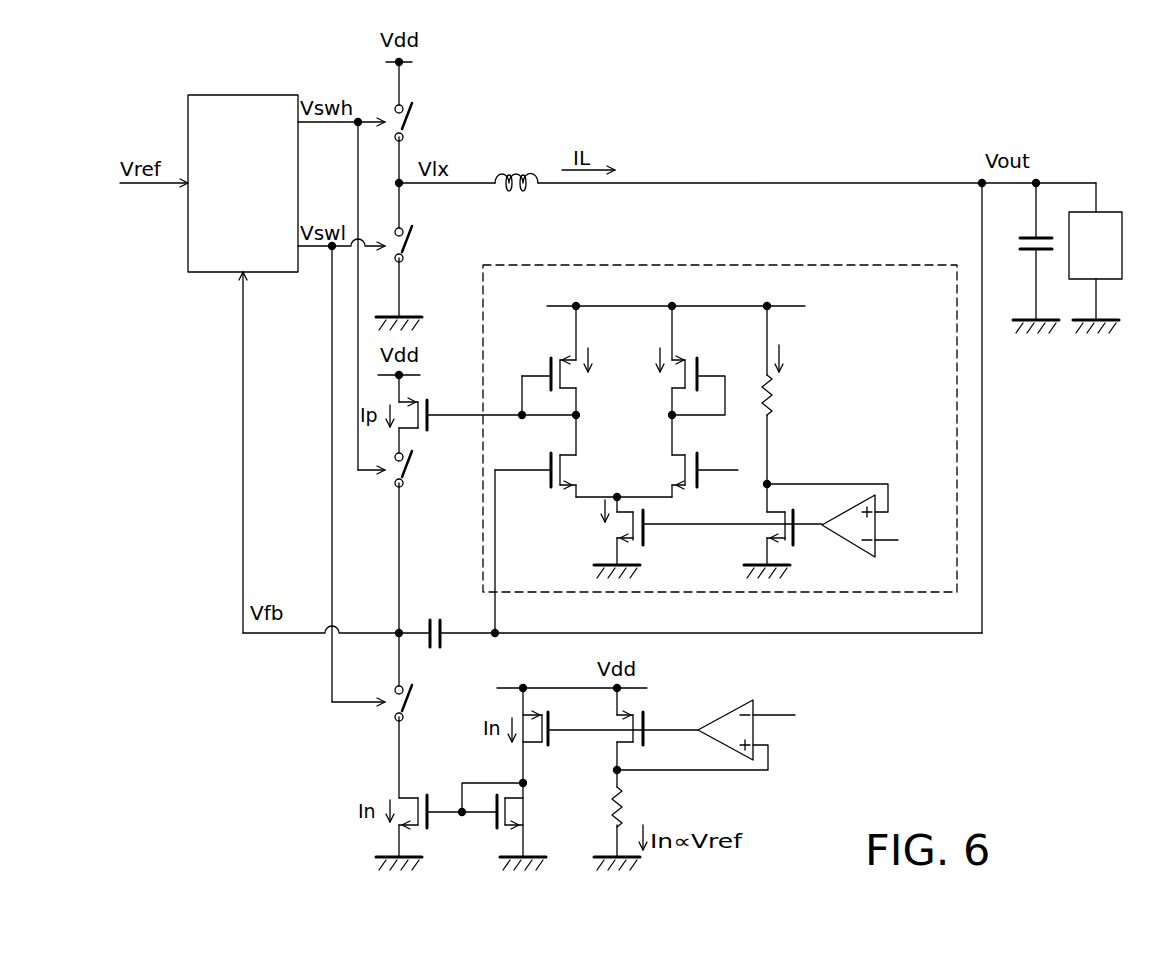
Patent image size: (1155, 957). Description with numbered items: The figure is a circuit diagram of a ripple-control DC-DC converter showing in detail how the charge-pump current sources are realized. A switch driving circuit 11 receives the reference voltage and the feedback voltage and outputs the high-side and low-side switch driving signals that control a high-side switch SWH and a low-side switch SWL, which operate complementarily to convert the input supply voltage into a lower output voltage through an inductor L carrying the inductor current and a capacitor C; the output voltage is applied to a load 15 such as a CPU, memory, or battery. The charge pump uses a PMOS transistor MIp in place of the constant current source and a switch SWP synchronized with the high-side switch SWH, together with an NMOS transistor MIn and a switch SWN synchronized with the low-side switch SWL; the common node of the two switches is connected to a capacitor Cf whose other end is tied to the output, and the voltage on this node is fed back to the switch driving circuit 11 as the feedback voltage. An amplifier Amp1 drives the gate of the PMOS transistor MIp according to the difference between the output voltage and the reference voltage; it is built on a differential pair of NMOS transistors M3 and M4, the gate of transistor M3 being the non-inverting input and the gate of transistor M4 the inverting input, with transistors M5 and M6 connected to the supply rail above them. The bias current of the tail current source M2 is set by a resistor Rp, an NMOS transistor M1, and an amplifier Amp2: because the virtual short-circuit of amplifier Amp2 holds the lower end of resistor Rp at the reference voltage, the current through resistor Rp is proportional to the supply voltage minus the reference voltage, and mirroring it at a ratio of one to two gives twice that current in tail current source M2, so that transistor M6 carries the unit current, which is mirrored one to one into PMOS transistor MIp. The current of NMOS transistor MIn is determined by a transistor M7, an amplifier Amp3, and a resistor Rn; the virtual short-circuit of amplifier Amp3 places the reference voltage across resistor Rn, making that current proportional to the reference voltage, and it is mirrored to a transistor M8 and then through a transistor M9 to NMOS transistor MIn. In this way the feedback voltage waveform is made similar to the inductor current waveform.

The switch driving circuit 11 is at (245, 95).
The load 15 is at (1112, 212).
The high-side switch SWH is at (424, 122).
The low-side switch SWL is at (425, 244).
The switch SWP is at (424, 469).
The switch SWN is at (424, 703).
The inductor L is at (516, 165).
The capacitor C is at (1030, 258).
The capacitor Cf is at (435, 619).
The amplifier Amp1 is at (720, 435).
The amplifier Amp2 is at (856, 532).
The amplifier Amp3 is at (729, 723).
The NMOS transistor M1 is at (776, 531).
The tail current source M2 is at (627, 537).
The transistor M3 is at (709, 464).
The transistor M4 is at (535, 532).
The transistor M5 is at (697, 380).
The transistor M6 is at (549, 380).
The transistor M7 is at (644, 737).
The transistor M8 is at (552, 735).
The transistor M9 is at (524, 826).
The PMOS transistor MIp is at (487, 416).
The NMOS transistor MIn is at (411, 832).
The resistor Rp is at (783, 397).
The resistor Rn is at (623, 828).